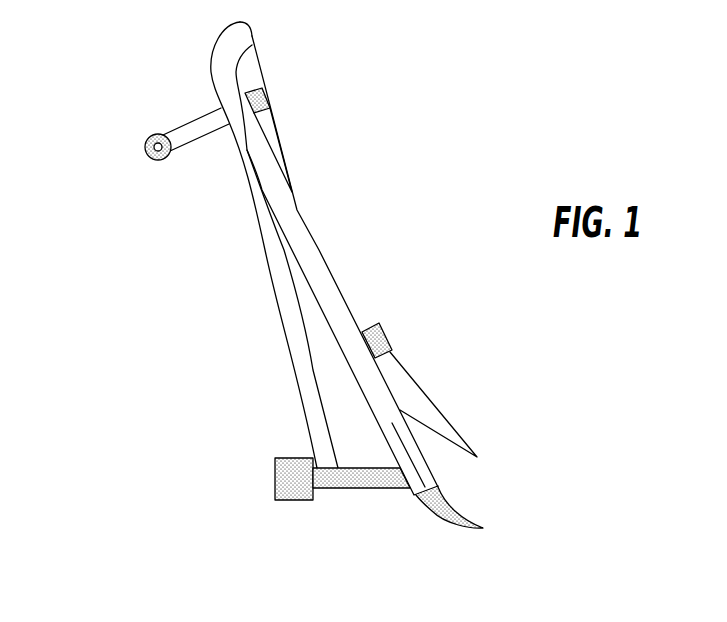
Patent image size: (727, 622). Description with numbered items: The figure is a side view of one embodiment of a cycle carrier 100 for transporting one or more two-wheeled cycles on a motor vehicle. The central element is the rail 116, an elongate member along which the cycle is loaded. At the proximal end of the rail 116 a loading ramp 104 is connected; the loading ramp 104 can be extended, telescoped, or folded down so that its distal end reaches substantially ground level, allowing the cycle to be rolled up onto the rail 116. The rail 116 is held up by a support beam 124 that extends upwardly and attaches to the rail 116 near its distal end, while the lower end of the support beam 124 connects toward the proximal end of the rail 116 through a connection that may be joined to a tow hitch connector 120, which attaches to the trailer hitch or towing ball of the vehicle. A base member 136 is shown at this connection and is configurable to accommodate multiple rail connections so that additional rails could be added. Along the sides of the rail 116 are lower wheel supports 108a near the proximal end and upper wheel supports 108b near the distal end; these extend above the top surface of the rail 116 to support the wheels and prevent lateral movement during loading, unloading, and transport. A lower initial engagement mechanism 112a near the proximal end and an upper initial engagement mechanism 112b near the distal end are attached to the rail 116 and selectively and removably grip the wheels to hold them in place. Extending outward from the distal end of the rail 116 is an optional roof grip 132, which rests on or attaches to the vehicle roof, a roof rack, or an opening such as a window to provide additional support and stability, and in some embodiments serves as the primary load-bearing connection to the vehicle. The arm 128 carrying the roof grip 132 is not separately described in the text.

The cycle carrier 100 is at (481, 127).
The loading ramp 104 is at (476, 522).
The lower wheel supports 108a is at (430, 418).
The upper wheel supports 108b is at (270, 128).
The lower initial engagement mechanism 112a is at (390, 333).
The upper initial engagement mechanism 112b is at (258, 83).
The rail 116 is at (303, 237).
The tow hitch connector 120 is at (273, 476).
The support beam 124 is at (292, 357).
The handle arm 128 is at (195, 141).
The roof grip 132 is at (145, 148).
The base member 136 is at (363, 492).